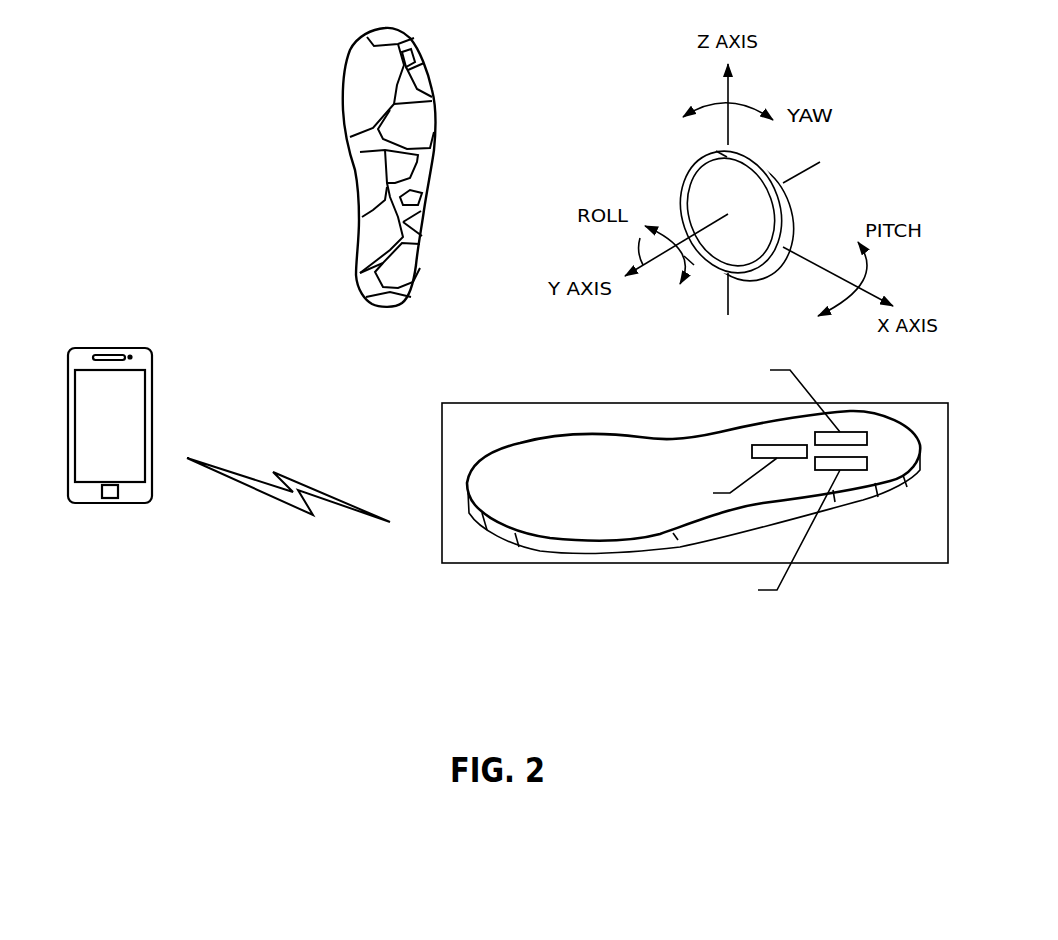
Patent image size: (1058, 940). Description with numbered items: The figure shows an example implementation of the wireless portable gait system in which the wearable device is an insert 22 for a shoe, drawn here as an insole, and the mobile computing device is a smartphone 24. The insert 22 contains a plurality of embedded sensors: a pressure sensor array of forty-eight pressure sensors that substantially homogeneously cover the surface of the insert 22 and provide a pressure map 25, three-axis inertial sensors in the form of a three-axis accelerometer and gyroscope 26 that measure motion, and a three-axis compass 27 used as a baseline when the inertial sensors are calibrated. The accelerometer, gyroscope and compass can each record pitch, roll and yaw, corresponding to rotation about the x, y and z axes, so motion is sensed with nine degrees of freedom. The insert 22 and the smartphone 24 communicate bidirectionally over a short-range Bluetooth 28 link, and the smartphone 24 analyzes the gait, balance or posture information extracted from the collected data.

The insert 22 is at (429, 437).
The smartphone 24 is at (118, 562).
The pressure map 25 is at (302, 352).
The three-axis accelerometer and gyroscope 26 is at (543, 381).
The three-axis compass 27 is at (710, 644).
The bluetooth module 28 is at (568, 492).